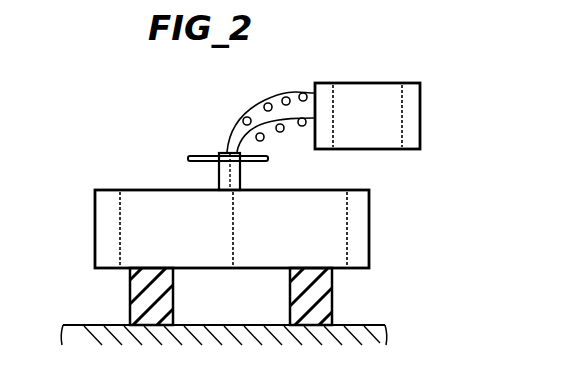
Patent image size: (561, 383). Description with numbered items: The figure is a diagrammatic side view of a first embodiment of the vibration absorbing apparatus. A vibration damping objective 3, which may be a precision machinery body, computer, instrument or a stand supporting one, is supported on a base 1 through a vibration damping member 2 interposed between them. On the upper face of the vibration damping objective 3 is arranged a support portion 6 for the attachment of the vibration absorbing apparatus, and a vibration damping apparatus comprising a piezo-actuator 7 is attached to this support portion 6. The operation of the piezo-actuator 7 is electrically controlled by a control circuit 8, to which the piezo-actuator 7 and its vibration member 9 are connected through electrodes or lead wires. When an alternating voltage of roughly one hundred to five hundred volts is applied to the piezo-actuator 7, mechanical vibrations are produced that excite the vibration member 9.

The base 1 is at (375, 327).
The vibration damping member 2 is at (335, 284).
The vibration damping objective 3 is at (372, 228).
The support portion 6 is at (240, 171).
The piezo-actuator 7 is at (204, 128).
The control circuit 8 is at (422, 112).
The vibration member 9 is at (192, 152).